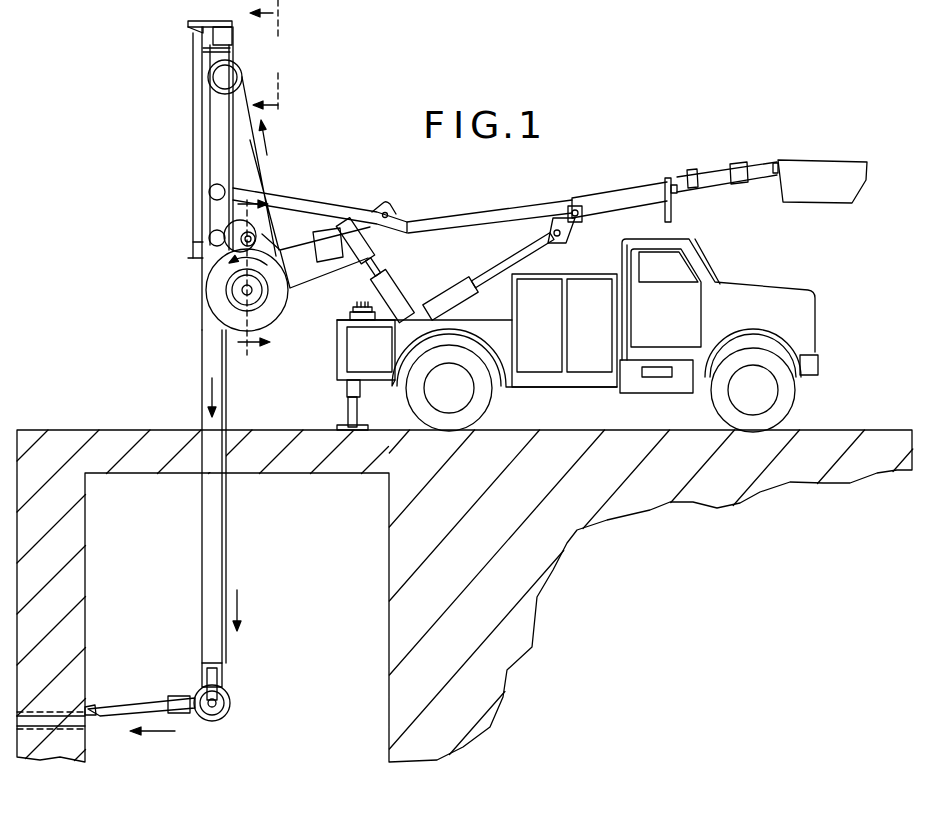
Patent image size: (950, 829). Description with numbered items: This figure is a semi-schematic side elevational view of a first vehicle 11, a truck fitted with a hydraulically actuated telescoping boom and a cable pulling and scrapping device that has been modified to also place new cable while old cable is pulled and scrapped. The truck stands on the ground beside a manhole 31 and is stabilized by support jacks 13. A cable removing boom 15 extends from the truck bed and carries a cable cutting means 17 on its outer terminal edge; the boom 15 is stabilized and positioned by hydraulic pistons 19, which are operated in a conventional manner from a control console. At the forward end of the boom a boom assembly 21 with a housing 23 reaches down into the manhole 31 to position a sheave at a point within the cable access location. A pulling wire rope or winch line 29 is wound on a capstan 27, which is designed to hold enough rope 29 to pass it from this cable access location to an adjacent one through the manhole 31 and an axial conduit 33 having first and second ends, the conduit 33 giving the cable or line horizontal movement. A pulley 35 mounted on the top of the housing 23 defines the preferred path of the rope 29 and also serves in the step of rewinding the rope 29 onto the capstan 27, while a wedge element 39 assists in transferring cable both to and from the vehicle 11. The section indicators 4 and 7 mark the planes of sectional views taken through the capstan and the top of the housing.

The section line 4- 4 is at (262, 290).
The section line 7- 7 is at (275, 59).
The first vehicle 11 is at (858, 296).
The support jacks 13 is at (345, 393).
The cable removing boom 15 is at (532, 197).
The cable cutting means 17 is at (803, 163).
The hydraulic pistons 19 is at (393, 303).
The boom assembly 21 is at (202, 330).
The housing 23 is at (205, 148).
The capstan 27 is at (273, 310).
The wire rope 29 is at (262, 192).
The manhole 31 is at (268, 473).
The conduit 33 is at (52, 710).
The pulley 35 is at (243, 76).
The wedge element 39 is at (228, 234).